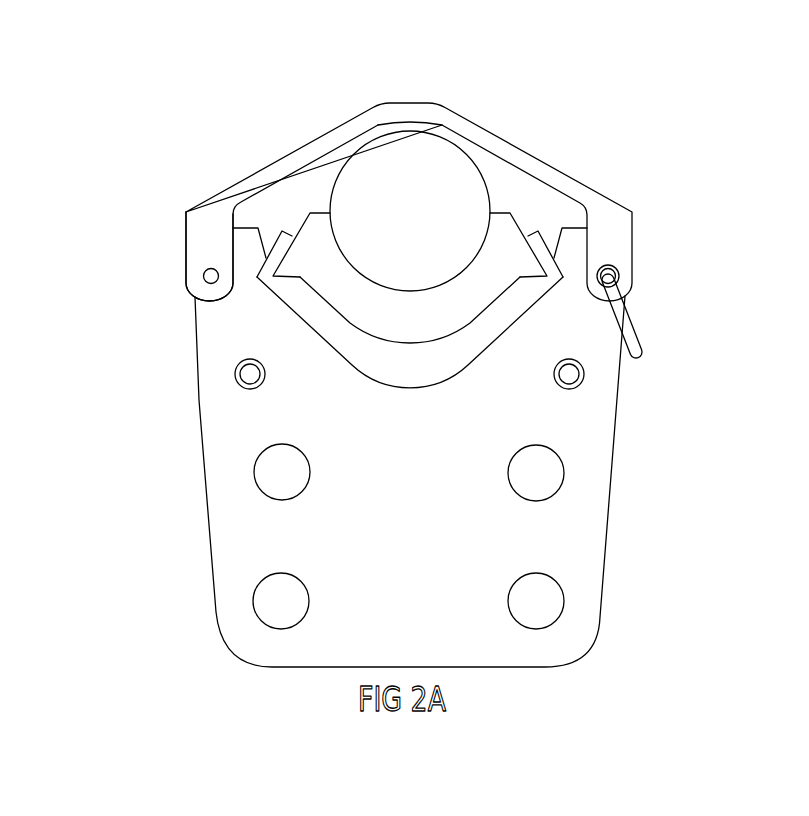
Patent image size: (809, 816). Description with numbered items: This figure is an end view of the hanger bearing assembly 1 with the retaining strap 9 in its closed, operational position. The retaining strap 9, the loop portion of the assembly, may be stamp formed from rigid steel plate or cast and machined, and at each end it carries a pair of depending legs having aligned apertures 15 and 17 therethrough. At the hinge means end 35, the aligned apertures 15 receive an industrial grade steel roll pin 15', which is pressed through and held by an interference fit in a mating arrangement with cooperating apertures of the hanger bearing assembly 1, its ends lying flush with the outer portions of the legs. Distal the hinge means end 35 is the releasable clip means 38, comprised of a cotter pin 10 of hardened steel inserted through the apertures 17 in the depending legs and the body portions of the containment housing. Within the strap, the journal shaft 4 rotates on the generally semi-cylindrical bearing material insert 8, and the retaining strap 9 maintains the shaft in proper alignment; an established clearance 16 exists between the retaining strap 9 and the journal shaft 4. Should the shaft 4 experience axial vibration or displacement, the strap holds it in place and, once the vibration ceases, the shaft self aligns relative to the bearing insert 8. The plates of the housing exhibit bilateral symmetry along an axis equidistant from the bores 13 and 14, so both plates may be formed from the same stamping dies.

The hanger bearing assembly 1 is at (618, 403).
The journal shaft 4 is at (471, 162).
The bearing material insert 8 is at (298, 227).
The retaining strap 9 is at (537, 158).
The cotter pin 10 is at (633, 315).
The bore 13 is at (563, 588).
The bore 14 is at (580, 385).
The aligned apertures 15 is at (156, 262).
The roll pin 15' is at (179, 223).
The clearance 16 is at (415, 127).
The apertures 17 is at (615, 268).
The hinge means end 35 is at (168, 312).
The releasable clip means 38 is at (658, 275).